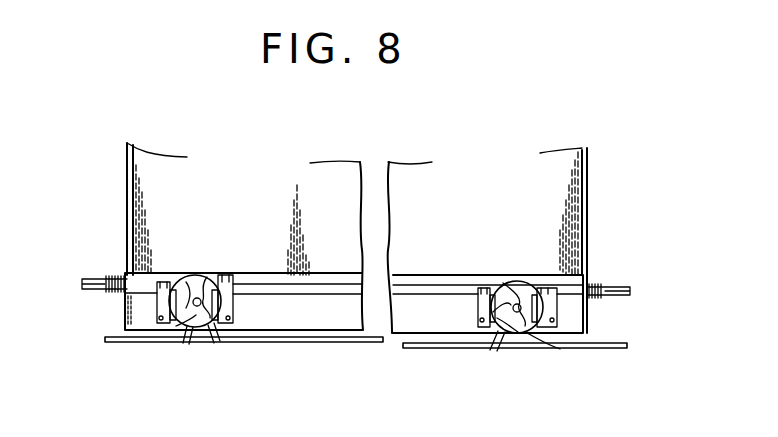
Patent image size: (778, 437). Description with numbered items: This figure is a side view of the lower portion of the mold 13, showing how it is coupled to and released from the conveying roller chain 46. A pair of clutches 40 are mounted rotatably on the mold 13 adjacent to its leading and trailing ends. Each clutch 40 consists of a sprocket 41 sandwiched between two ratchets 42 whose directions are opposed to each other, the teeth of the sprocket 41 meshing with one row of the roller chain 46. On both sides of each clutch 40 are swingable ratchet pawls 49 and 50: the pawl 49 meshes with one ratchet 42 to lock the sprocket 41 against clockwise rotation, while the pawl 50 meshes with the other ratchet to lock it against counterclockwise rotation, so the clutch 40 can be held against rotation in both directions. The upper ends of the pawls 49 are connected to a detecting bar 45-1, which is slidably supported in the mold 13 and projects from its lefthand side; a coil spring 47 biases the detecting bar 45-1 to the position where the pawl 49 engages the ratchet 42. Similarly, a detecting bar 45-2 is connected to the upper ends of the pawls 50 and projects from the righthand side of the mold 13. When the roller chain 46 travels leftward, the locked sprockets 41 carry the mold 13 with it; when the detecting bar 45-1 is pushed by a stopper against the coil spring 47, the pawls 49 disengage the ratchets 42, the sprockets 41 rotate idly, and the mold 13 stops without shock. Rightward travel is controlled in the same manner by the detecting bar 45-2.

The mold 13 is at (136, 182).
The clutch 40 is at (193, 341).
The sprocket 41 is at (183, 345).
The ratchet 42 is at (208, 332).
The detecting bar 45-1 is at (96, 273).
The detecting bar 45-2 is at (430, 288).
The roller chain 46 is at (612, 349).
The coil spring 47 is at (117, 273).
The ratchet pawl 49 is at (157, 309).
The ratchet pawl 50 is at (234, 307).